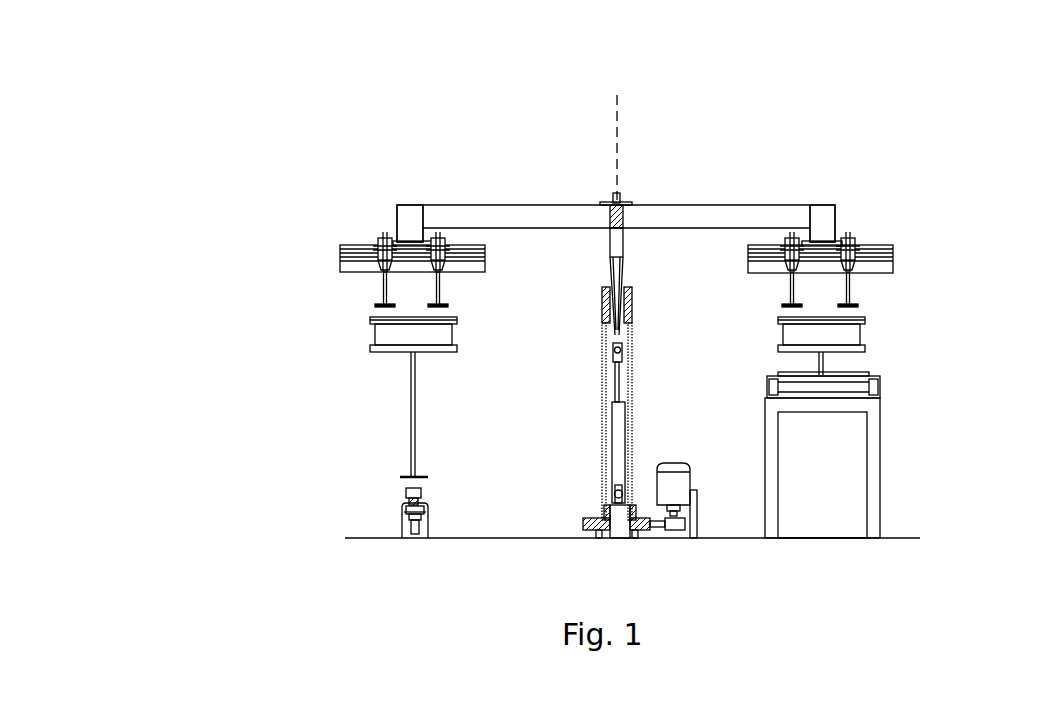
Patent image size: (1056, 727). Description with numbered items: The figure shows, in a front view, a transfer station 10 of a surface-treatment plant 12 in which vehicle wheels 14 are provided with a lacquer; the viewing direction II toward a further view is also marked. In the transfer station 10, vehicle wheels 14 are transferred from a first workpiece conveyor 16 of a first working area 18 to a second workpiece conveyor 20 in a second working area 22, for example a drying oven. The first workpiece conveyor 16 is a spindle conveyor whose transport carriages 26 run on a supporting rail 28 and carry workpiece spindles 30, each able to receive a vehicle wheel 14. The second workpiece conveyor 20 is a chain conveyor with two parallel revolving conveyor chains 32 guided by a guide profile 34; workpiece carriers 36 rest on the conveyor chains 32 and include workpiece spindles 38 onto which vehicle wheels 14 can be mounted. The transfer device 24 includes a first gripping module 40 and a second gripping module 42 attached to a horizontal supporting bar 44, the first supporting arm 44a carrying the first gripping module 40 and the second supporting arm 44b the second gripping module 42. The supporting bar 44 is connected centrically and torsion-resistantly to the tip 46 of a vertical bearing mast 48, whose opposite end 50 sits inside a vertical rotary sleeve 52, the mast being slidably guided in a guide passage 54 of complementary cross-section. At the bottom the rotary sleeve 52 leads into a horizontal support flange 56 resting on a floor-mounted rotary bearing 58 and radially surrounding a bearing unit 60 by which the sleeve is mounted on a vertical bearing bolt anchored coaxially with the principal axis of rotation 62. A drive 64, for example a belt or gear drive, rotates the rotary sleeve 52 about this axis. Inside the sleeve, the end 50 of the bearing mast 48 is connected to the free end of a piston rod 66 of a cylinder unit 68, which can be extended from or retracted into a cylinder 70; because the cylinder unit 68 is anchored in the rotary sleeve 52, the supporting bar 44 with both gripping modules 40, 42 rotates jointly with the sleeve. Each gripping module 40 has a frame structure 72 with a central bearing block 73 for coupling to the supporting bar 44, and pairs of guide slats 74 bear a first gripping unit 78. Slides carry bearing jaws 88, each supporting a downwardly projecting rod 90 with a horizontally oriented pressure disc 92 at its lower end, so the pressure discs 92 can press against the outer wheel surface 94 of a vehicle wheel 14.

The transfer station 10 is at (770, 132).
The surface-treatment plant 12 is at (212, 108).
The vehicle wheel 14 is at (444, 333).
The first workpiece conveyor 16 is at (398, 521).
The first working area 18 is at (312, 470).
The second workpiece conveyor 20 is at (880, 393).
The second working area 22 is at (935, 432).
The transfer device 24 is at (592, 172).
The transport carriage 26 is at (425, 497).
The supporting rail 28 is at (428, 525).
The workpiece spindle 30 is at (416, 414).
The conveyor chain 32 is at (778, 395).
The guide profile 34 is at (768, 403).
The workpiece carrier 36 is at (795, 383).
The workpiece spindle 38 is at (800, 372).
The first gripping module 40 is at (340, 270).
The second gripping module 42 is at (898, 270).
The horizontal supporting bar 44 is at (522, 205).
The first supporting arm 44a is at (464, 215).
The second supporting arm 44b is at (738, 205).
The tip of bearing mast 46 is at (623, 222).
The vertical bearing mast 48 is at (623, 240).
The end of bearing mast 50 is at (610, 345).
The rotary sleeve 52 is at (603, 418).
The guide passage 54 is at (628, 308).
The support flange 56 is at (592, 525).
The rotary bearing 58 is at (597, 542).
The bearing unit 60 is at (605, 507).
The principal axis of rotation 62 is at (620, 112).
The drive 64 is at (675, 476).
The piston rod 66 is at (603, 383).
The cylinder unit 68 is at (627, 420).
The cylinder 70 is at (620, 447).
The frame structure 72 is at (489, 270).
The pair of guide slats 74 is at (482, 249).
The first gripping unit 78 is at (383, 203).
The bearing jaw 88 is at (383, 243).
The rod 90 is at (385, 295).
The pressure disc 92 is at (380, 310).
The outer wheel surface 94 is at (372, 330).
The view direction II is at (300, 348).
The bearing block 73 is at (410, 205).